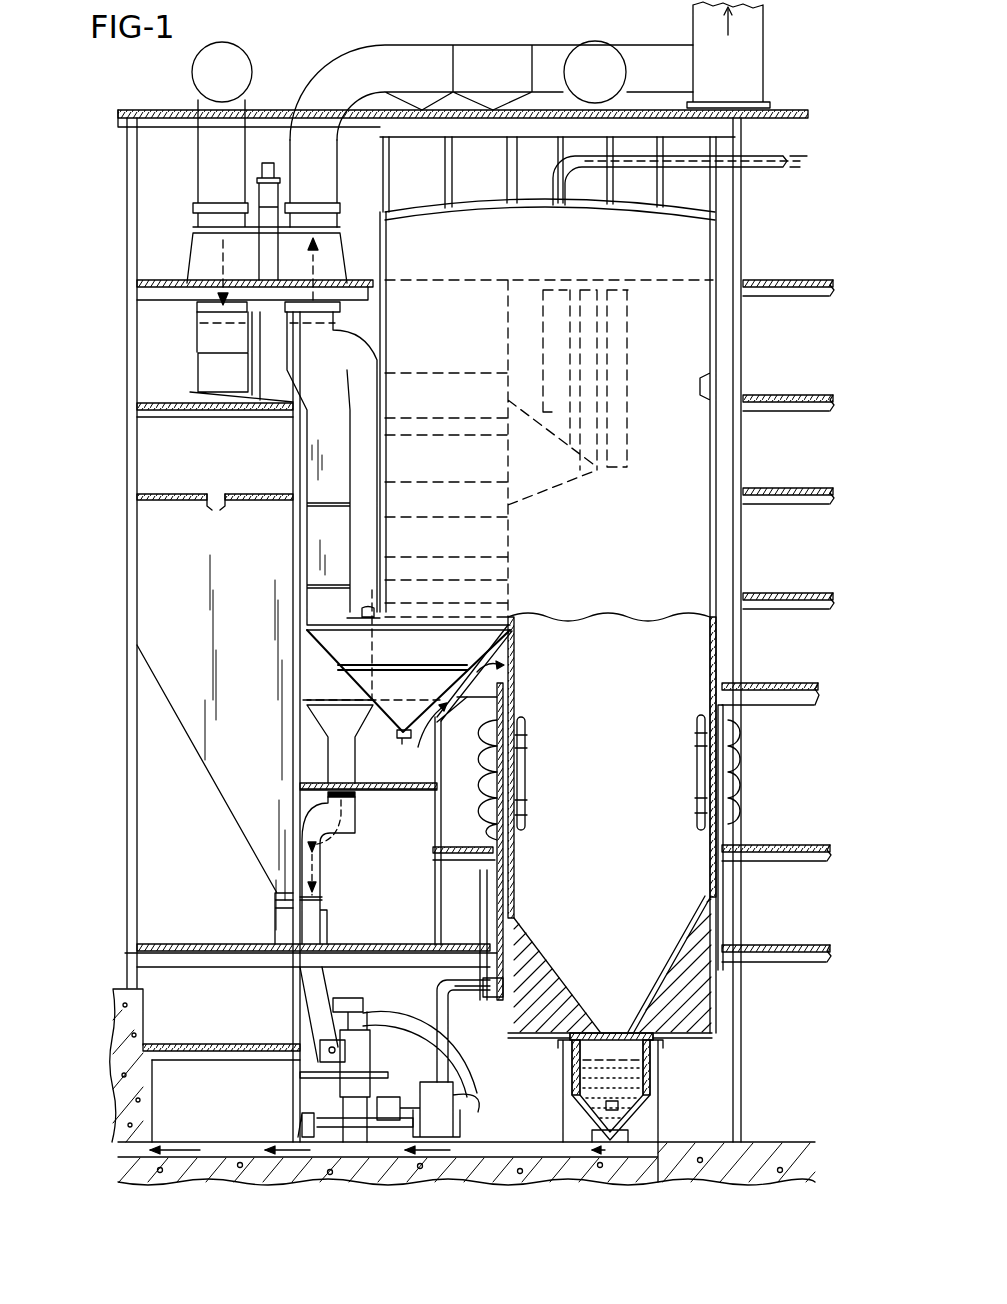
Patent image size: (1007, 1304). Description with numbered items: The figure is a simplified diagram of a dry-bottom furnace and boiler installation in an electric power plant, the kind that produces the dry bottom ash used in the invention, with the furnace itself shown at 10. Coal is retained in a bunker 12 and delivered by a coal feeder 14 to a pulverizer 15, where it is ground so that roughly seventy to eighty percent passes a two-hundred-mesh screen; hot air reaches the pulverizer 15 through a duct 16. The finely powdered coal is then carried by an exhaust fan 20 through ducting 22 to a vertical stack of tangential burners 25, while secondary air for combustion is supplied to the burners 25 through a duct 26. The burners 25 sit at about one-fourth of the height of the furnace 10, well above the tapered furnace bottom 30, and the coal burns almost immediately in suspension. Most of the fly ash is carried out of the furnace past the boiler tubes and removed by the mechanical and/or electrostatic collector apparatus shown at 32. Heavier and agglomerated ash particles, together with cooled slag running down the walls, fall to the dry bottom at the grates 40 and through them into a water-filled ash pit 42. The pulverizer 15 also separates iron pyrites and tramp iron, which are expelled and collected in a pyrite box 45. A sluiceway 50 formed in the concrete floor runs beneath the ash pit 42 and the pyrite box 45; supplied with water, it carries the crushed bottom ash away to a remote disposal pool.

The furnace 10 is at (717, 655).
The bunker 12 is at (152, 556).
The coal feeder 14 is at (313, 1043).
The pulverizer 15 is at (365, 1087).
The duct 16 is at (316, 862).
The exhaust fan 20 is at (450, 1102).
The ducting 22 is at (440, 1000).
The tangential burners 25 is at (528, 775).
The duct 26 is at (424, 738).
The tapered furnace bottom 30 is at (670, 968).
The collector apparatus 32 is at (414, 50).
The grates 40 is at (612, 1030).
The ash pit 42 is at (645, 1068).
The pyrite box 45 is at (310, 1123).
The sluiceway 50 is at (542, 1158).